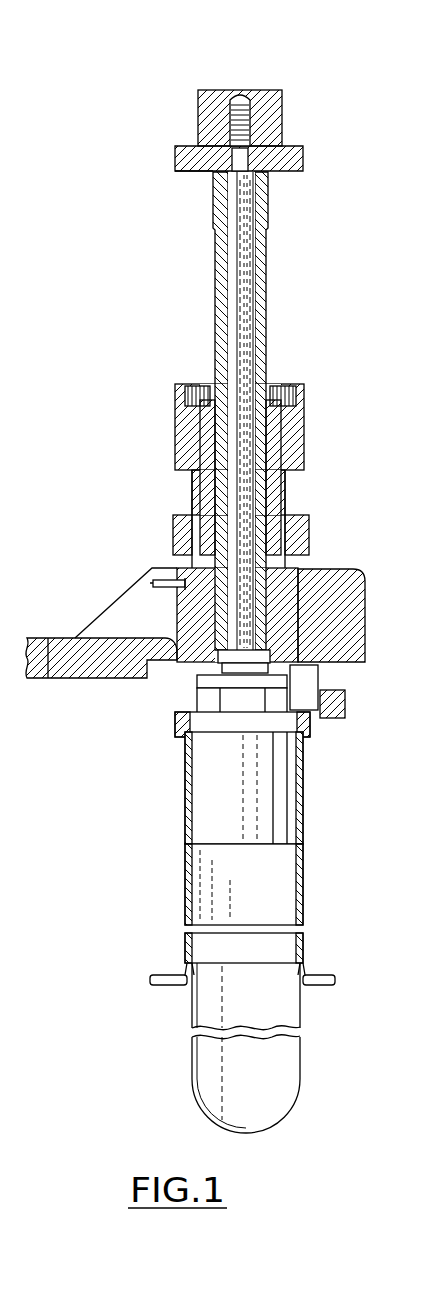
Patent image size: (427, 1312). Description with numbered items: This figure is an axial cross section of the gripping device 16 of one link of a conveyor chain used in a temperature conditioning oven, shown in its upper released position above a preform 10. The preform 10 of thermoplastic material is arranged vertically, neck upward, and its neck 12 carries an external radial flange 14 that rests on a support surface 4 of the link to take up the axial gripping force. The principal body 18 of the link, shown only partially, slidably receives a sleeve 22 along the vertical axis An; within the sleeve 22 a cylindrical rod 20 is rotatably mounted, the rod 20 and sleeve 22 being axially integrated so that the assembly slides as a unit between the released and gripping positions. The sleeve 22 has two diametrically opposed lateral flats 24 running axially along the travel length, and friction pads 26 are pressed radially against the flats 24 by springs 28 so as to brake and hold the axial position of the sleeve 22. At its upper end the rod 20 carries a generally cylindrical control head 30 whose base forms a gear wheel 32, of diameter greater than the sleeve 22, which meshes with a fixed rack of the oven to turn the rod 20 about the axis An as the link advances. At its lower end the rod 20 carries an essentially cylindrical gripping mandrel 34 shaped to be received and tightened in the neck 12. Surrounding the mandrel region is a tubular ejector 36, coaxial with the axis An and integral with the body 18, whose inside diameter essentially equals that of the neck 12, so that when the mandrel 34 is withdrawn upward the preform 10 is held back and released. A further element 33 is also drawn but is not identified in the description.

The vertical axis An is at (238, 62).
The control head 30 is at (297, 122).
The gear wheel 32 is at (303, 158).
The bore 33 is at (197, 170).
The sleeve 22 is at (272, 208).
The cylindrical rod 20 is at (256, 265).
The lateral flats 24 is at (215, 332).
The friction pads 26 is at (267, 373).
The springs 28 is at (282, 393).
The principal body 18 is at (90, 670).
The gripping device 16 is at (165, 770).
The gripping mandrel 34 is at (265, 785).
The tubular ejector 36 is at (305, 878).
The neck 12 is at (307, 942).
The external radial flange 14 is at (312, 966).
The support surface 4 is at (172, 987).
The preform 10 is at (178, 1070).